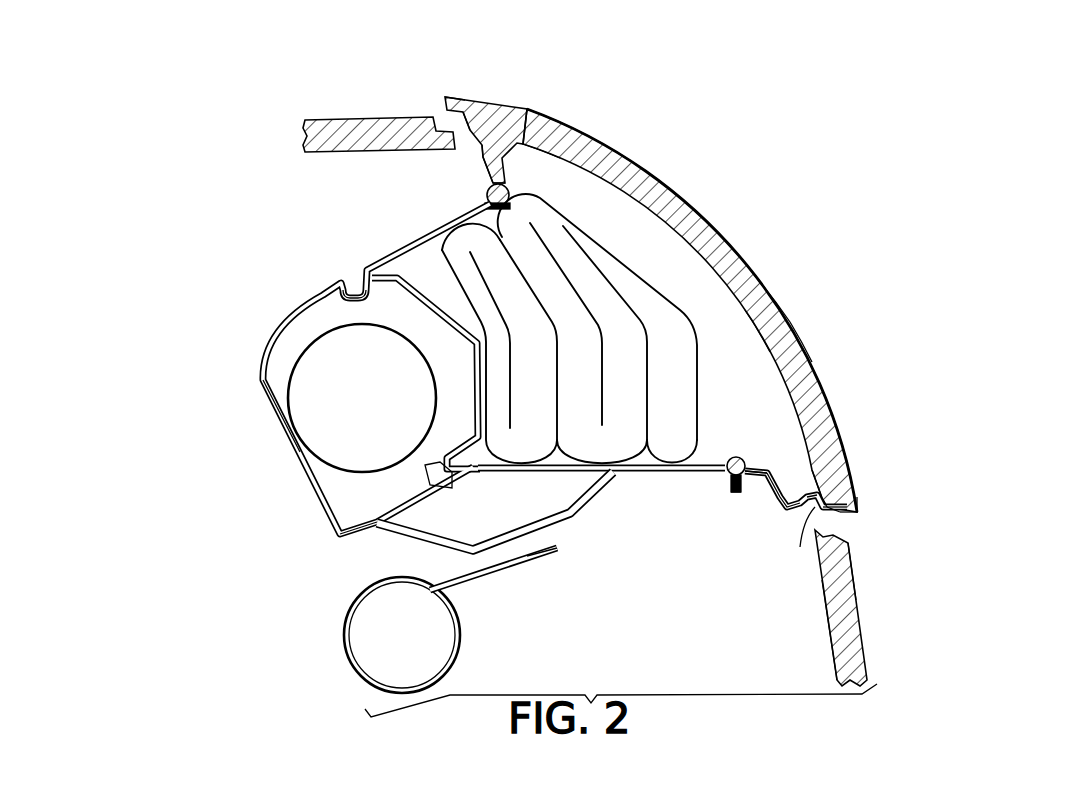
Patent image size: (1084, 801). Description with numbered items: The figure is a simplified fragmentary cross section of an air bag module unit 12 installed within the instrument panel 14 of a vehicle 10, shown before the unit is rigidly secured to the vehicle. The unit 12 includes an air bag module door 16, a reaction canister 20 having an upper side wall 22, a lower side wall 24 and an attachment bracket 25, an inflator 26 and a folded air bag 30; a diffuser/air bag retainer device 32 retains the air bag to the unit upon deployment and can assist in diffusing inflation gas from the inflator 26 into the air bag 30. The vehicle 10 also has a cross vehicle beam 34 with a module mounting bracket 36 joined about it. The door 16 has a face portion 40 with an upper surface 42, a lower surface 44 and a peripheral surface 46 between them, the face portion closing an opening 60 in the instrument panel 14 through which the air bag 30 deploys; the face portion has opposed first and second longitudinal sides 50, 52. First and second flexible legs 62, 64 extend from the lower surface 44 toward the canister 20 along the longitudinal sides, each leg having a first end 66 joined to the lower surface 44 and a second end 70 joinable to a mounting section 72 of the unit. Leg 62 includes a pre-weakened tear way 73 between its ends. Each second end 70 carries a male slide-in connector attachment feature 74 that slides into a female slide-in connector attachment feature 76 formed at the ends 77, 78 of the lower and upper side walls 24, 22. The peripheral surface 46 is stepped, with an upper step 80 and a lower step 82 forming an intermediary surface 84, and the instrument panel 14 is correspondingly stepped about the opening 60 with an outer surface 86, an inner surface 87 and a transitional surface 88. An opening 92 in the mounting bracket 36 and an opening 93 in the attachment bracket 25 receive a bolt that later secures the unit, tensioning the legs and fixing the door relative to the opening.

The vehicle 10 is at (763, 88).
The air bag module unit 12 is at (225, 318).
The instrument panel 14 is at (325, 116).
The air bag module door 16 is at (738, 262).
The reaction canister 20 is at (280, 422).
The upper side wall 22 is at (392, 247).
The lower side wall 24 is at (624, 474).
The attachment bracket 25 is at (398, 538).
The inflator 26 is at (376, 411).
The air bag 30 is at (612, 277).
The diffuser/air bag retainer device 32 is at (350, 267).
The cross vehicle beam 34 is at (385, 653).
The module mounting bracket 36 is at (480, 595).
The face portion 40 is at (780, 325).
The upper surface 42 is at (815, 358).
The lower surface 44 is at (757, 340).
The peripheral surface 46 is at (445, 108).
The first longitudinal side 50 is at (860, 505).
The second longitudinal side 52 is at (452, 92).
The opening 60 is at (803, 548).
The first flexible leg 62 is at (778, 490).
The second flexible leg 64 is at (478, 140).
The first end 66 is at (492, 140).
The second end 70 is at (550, 126).
The mounting section 72 is at (510, 193).
The tear way 73 is at (818, 508).
The male form slide-in connector attachment feature 74 is at (492, 187).
The female form slide-in connector attachment feature 76 is at (480, 205).
The end of lower side wall 77 is at (724, 500).
The end of upper side wall 78 is at (486, 198).
The upper step 80 is at (855, 513).
The lower step 82 is at (840, 515).
The intermediary surface 84 is at (840, 500).
The outer surface 86 is at (860, 622).
The inner surface 87 is at (826, 650).
The transitional surface 88 is at (850, 570).
The opening in mounting bracket 92 is at (543, 578).
The opening in attachment bracket 93 is at (540, 525).